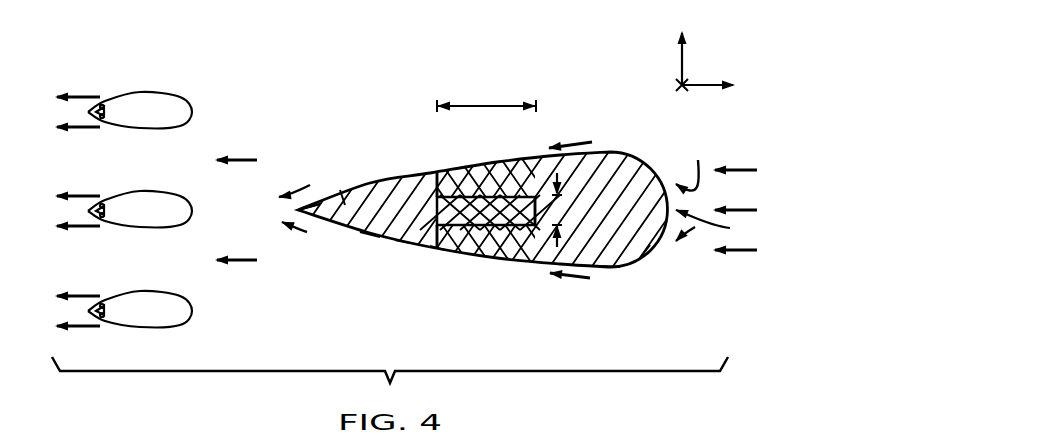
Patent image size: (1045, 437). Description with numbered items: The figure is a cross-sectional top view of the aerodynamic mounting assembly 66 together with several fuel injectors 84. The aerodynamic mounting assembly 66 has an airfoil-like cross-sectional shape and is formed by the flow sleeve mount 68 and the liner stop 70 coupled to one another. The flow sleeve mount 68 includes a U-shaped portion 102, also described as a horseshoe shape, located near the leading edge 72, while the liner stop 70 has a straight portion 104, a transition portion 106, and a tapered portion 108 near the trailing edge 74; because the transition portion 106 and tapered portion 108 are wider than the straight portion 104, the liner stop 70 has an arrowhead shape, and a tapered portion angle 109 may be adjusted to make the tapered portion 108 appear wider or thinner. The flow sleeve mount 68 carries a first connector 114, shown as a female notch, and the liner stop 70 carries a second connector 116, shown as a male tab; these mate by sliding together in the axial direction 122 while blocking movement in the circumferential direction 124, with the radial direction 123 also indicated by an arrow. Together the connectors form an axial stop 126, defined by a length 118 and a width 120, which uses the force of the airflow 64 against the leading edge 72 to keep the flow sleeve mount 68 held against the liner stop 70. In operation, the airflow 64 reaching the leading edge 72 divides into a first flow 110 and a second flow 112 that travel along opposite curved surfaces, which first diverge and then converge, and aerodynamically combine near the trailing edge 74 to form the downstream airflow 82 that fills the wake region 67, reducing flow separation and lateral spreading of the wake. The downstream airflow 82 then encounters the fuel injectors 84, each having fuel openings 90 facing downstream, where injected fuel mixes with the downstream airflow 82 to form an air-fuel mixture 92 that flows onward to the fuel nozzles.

The airflow 64 is at (740, 168).
The aerodynamic mounting assembly 66 is at (632, 145).
The wake region 67 is at (268, 197).
The flow sleeve mount 68 is at (643, 258).
The liner stop 70 is at (370, 234).
The leading edge 72 is at (714, 224).
The trailing edge 74 is at (296, 211).
The downstream airflow 82 is at (240, 159).
The fuel injector 84 is at (160, 92).
The fuel opening 90 is at (104, 104).
The air-fuel mixture 92 is at (82, 130).
The U-shaped portion 102 is at (610, 273).
The straight portion 104 is at (455, 174).
The transition portion 106 is at (437, 250).
The tapered portion 108 is at (402, 243).
The tapered portion angle 109 is at (362, 187).
The first flow 110 is at (293, 192).
The second flow 112 is at (297, 232).
The first connector 114 is at (463, 253).
The second connector 116 is at (437, 178).
The length 118 is at (488, 107).
The width 120 is at (525, 262).
The axial direction 122 is at (705, 88).
The radial direction 123 is at (680, 84).
The circumferential direction 124 is at (685, 60).
The axial stop 126 is at (483, 183).